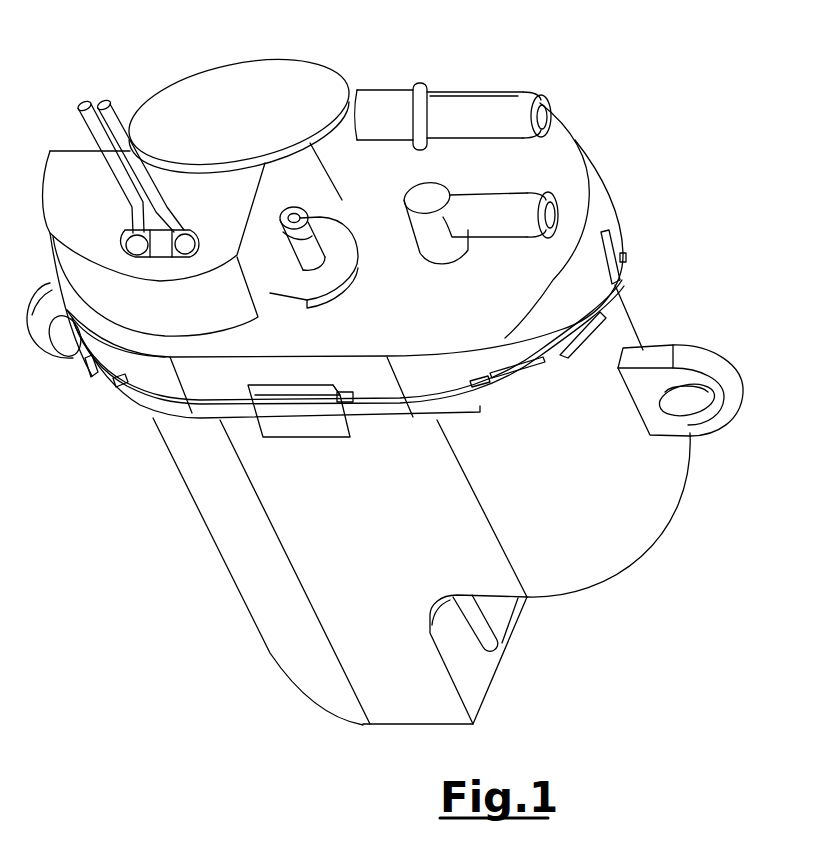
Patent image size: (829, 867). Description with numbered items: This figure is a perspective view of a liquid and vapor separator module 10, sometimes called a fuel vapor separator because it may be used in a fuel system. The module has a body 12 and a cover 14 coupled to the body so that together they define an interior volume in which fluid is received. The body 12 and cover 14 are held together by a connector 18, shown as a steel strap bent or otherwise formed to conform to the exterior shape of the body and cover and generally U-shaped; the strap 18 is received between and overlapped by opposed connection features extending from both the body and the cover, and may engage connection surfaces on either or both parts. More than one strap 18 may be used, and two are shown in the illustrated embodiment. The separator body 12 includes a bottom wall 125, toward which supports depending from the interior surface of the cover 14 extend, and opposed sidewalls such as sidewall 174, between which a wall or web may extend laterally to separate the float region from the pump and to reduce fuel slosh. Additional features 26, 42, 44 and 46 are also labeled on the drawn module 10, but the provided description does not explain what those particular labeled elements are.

The liquid and vapor separator module 10 is at (641, 62).
The body 12 is at (636, 307).
The cover 14 is at (552, 101).
The connector (steel strap) 18 is at (217, 408).
The retaining tabs 26 is at (507, 375).
The outlet port 42 is at (505, 210).
The vent connector 44 is at (312, 250).
The inlet port 46 is at (476, 106).
The bottom wall 125 is at (485, 690).
The sidewall 174 is at (335, 590).